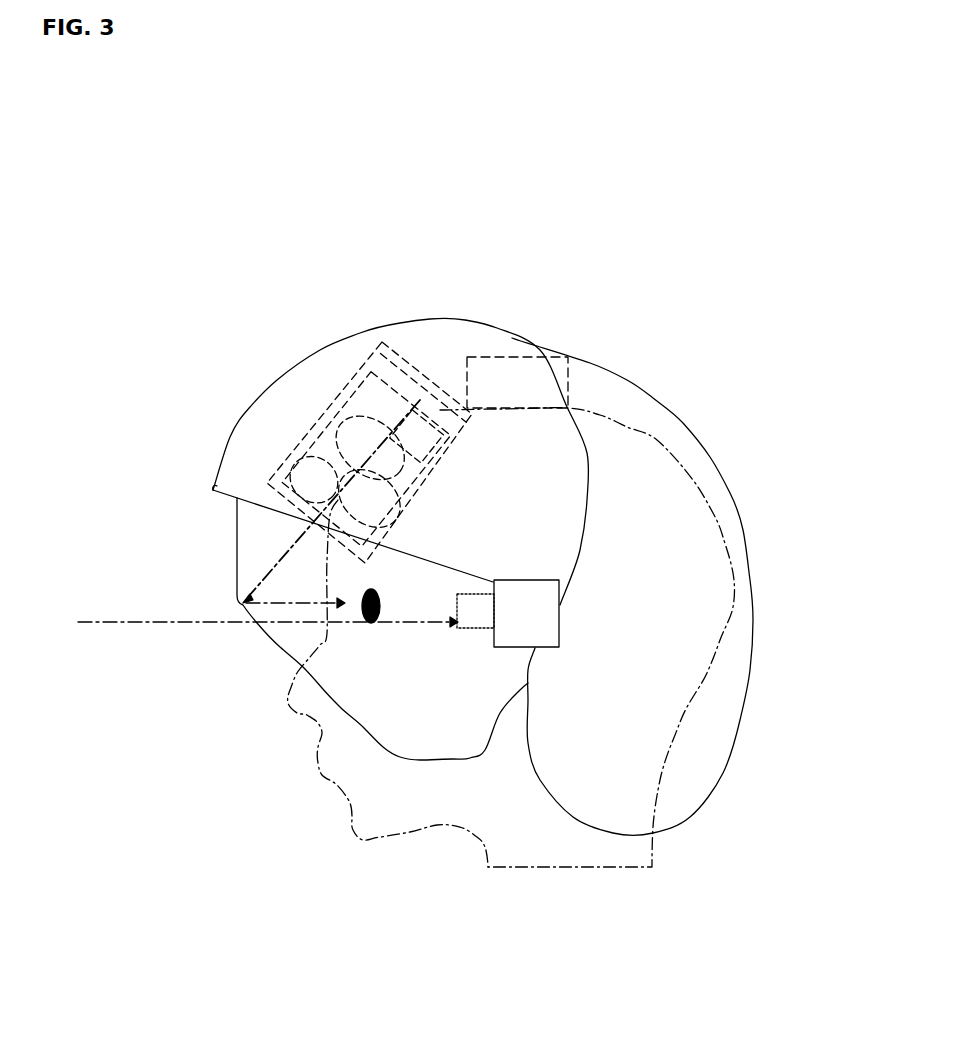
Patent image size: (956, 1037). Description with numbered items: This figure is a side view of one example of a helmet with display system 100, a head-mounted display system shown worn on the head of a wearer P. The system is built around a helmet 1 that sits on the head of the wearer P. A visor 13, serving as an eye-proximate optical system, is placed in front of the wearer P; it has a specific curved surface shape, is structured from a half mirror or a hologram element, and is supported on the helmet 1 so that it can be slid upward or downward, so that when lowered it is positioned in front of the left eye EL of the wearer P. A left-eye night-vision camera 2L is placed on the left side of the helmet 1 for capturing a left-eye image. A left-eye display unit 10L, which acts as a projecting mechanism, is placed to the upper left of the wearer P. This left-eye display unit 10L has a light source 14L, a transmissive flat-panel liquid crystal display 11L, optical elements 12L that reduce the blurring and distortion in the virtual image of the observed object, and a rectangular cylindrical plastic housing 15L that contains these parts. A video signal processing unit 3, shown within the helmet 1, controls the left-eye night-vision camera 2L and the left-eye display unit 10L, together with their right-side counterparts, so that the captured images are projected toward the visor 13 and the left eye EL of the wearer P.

The helmet with display system 100 is at (478, 165).
The helmet 1 is at (642, 420).
The video signal processing unit 3 is at (520, 390).
The left-eye display unit 10L is at (275, 181).
The transmissive flat-panel liquid crystal display 11L is at (367, 402).
The optical elements 12L is at (312, 443).
The visor 13 is at (263, 543).
The light source 14L is at (387, 362).
The rectangular cylindrical plastic housing 15L is at (283, 466).
The left-eye night-vision camera 2L is at (559, 623).
The left eye EL is at (382, 622).
The wearer P is at (508, 810).